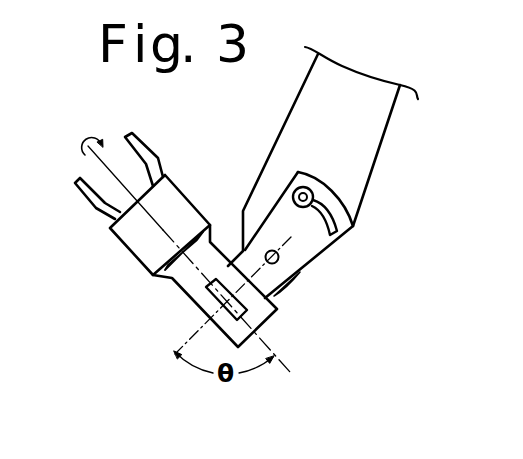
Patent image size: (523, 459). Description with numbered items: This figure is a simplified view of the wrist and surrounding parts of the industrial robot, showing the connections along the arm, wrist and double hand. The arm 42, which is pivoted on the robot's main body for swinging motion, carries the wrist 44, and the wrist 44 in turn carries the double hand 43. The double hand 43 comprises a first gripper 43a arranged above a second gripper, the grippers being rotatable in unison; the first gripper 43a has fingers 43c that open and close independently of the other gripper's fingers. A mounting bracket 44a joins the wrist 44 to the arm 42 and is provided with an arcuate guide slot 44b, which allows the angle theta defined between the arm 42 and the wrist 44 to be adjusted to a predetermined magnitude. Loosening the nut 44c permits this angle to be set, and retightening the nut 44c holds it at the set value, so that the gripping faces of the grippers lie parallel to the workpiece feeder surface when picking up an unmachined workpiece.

The arm 42 is at (367, 138).
The double hand 43 is at (121, 251).
The first gripper 43a is at (172, 207).
The fingers 43c is at (85, 199).
The wrist 44 is at (188, 292).
The mounting bracket 44a is at (309, 257).
The arcuate guide slot 44b is at (350, 213).
The nut 44c is at (298, 186).